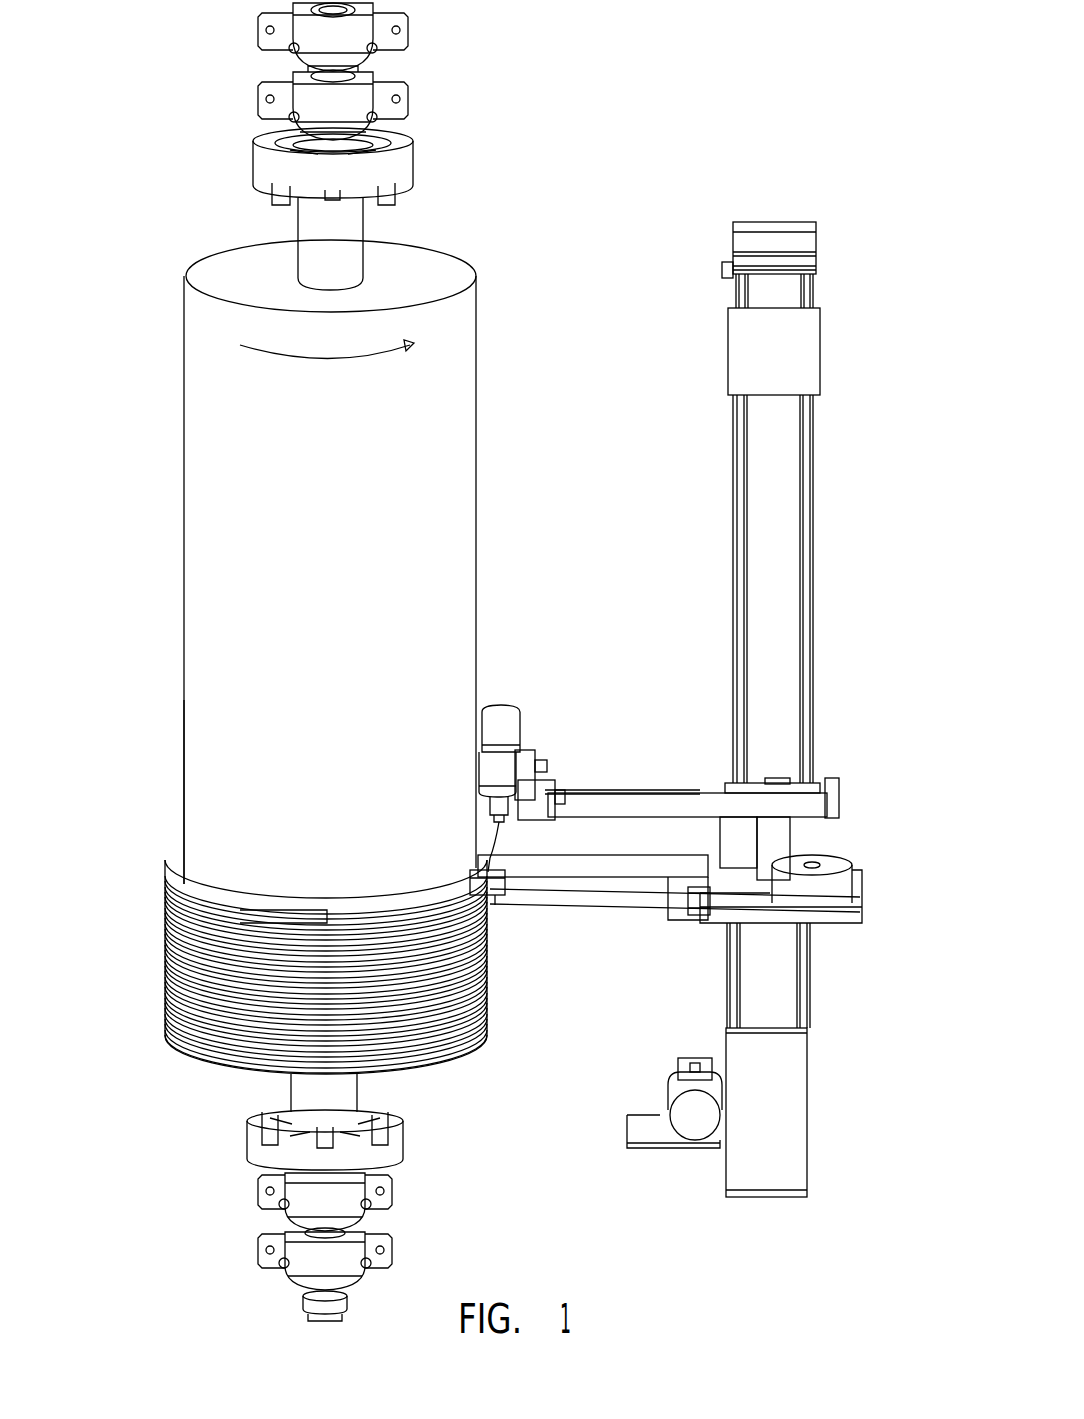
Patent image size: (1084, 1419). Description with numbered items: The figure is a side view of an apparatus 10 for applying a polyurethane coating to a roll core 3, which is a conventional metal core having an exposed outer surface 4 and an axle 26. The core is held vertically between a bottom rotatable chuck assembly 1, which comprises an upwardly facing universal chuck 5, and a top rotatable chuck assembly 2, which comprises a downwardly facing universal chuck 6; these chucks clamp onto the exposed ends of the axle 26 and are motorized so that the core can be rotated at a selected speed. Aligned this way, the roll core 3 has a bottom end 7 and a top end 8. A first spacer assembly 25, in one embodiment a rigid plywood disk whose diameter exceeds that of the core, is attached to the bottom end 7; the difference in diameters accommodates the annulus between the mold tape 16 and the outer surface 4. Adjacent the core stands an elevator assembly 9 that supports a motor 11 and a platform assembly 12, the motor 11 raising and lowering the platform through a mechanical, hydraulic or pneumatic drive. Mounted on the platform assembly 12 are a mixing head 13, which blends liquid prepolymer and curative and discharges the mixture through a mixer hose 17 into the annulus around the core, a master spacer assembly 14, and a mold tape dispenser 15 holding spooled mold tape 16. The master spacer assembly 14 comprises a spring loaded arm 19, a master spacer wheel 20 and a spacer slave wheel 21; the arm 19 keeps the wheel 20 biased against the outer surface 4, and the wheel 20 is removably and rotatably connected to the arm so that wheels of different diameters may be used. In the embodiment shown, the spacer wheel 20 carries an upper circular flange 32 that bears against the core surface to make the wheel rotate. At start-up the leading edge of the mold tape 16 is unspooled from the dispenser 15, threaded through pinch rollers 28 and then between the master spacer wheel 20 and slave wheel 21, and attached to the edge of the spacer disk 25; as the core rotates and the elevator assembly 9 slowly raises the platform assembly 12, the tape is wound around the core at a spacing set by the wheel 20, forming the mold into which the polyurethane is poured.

The bottom rotatable chuck assembly 1 is at (400, 1150).
The top rotatable chuck assembly 2 is at (402, 155).
The roll core 3 is at (440, 275).
The outer surface 4 is at (363, 601).
The upwardly facing universal chuck 5 is at (252, 1153).
The downwardly facing universal chuck 6 is at (262, 162).
The bottom end 7 is at (205, 780).
The top end 8 is at (430, 398).
The elevator assembly 9 is at (790, 522).
The apparatus 10 is at (542, 166).
The motor 11 is at (690, 1108).
The platform assembly 12 is at (862, 918).
The mixing head 13 is at (510, 730).
The master spacer assembly 14 is at (492, 868).
The mold tape dispenser 15 is at (848, 870).
The mold tape 16 is at (236, 905).
The mixer hose 17 is at (500, 830).
The spring loaded arm 19 is at (585, 866).
The master spacer wheel 20 is at (470, 893).
The spacer slave wheel 21 is at (500, 910).
The first spacer assembly 25 is at (470, 1058).
The axle 26 is at (360, 220).
The pinch rollers 28 is at (700, 912).
The upper circular flange 32 is at (480, 878).